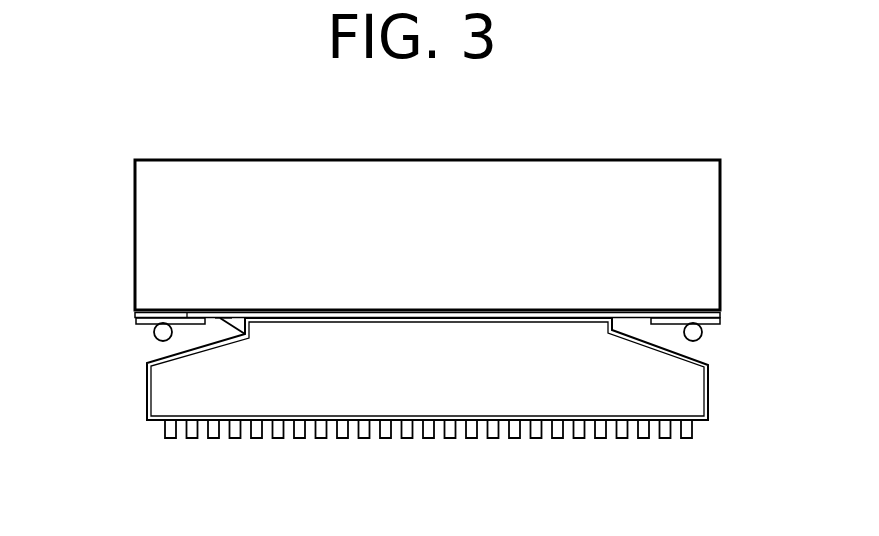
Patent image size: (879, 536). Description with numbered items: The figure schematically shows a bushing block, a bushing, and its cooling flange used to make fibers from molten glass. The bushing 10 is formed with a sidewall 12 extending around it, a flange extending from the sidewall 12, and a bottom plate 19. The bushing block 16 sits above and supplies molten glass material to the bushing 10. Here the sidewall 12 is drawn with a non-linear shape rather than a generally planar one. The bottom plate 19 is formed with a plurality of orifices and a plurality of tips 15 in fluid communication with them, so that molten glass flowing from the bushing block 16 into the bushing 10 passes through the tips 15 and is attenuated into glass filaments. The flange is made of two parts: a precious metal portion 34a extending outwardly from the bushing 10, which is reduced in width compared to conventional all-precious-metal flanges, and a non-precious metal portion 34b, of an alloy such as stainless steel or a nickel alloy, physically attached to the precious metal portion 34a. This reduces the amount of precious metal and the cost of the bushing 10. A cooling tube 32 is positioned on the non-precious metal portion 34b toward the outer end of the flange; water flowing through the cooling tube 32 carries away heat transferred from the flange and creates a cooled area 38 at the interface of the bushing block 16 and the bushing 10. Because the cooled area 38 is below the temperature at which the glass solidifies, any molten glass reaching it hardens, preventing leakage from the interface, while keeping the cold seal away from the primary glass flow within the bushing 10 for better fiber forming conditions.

The bushing 10 is at (462, 385).
The sidewall 12 is at (710, 395).
The tips 15 is at (600, 438).
The bushing block 16 is at (135, 231).
The bottom plate 19 is at (709, 421).
The cooling tube 32 is at (153, 334).
The precious metal portion 34a is at (223, 316).
The non-precious metal portion 34b is at (146, 324).
The cooled area 38 is at (252, 298).